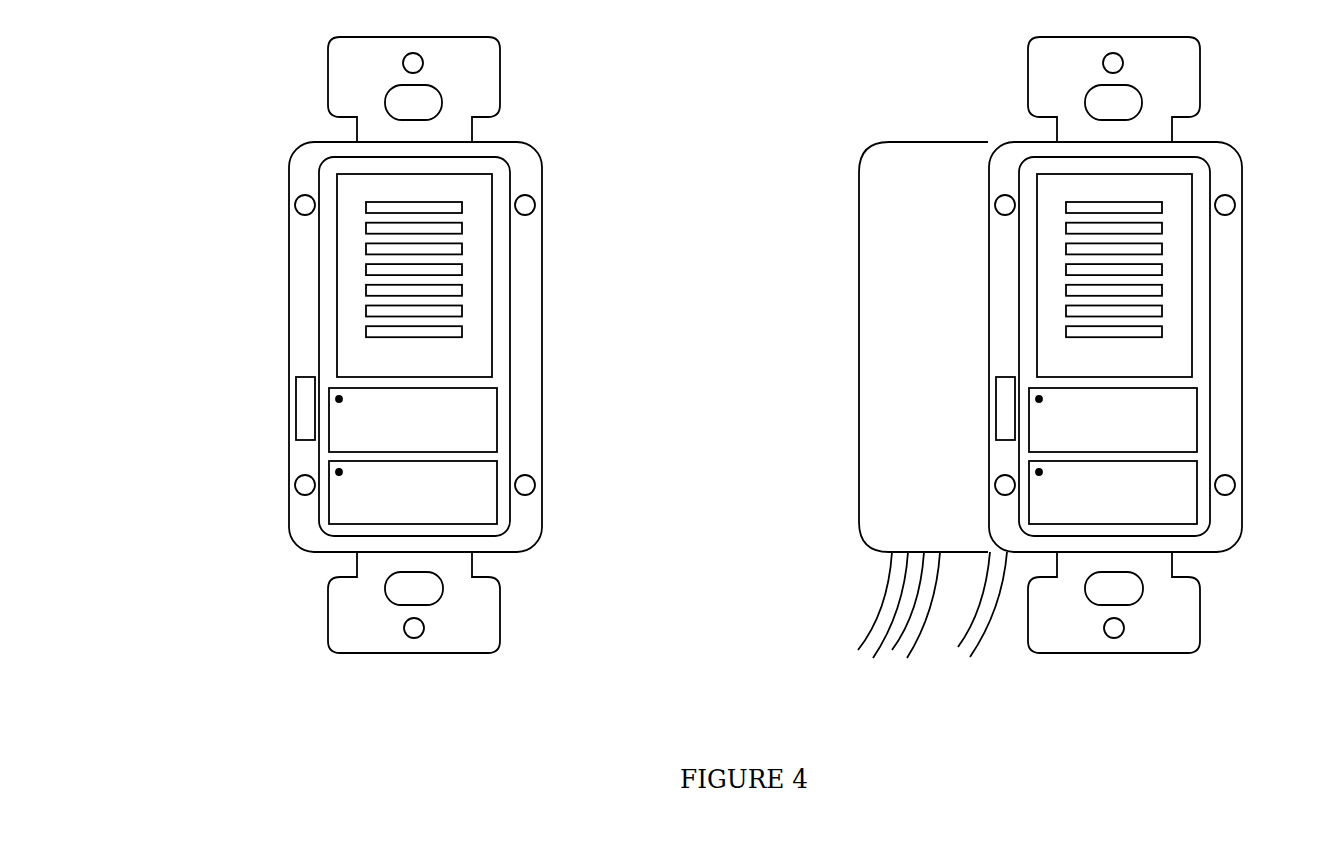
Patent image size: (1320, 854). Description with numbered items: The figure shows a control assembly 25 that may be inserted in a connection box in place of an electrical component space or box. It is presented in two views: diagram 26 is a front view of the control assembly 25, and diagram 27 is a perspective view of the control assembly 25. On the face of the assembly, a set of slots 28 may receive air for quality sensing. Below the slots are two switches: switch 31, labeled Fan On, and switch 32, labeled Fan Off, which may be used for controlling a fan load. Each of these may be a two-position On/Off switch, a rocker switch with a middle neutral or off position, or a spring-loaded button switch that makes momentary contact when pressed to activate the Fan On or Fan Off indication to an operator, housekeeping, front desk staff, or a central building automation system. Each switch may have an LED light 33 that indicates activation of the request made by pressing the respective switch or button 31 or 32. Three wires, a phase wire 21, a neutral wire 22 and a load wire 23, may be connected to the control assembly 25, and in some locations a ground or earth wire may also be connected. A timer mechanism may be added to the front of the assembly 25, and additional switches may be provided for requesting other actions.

The phase wire 21 is at (893, 585).
The neutral wire 22 is at (912, 626).
The load wire 23 is at (977, 628).
The control assembly 25 is at (510, 542).
The diagram 26 is at (266, 118).
The diagram 27 is at (828, 184).
The slots 28 is at (462, 328).
The Fan On switch 31 is at (487, 400).
The Fan Off switch 32 is at (487, 472).
The LED light 33 is at (339, 399).